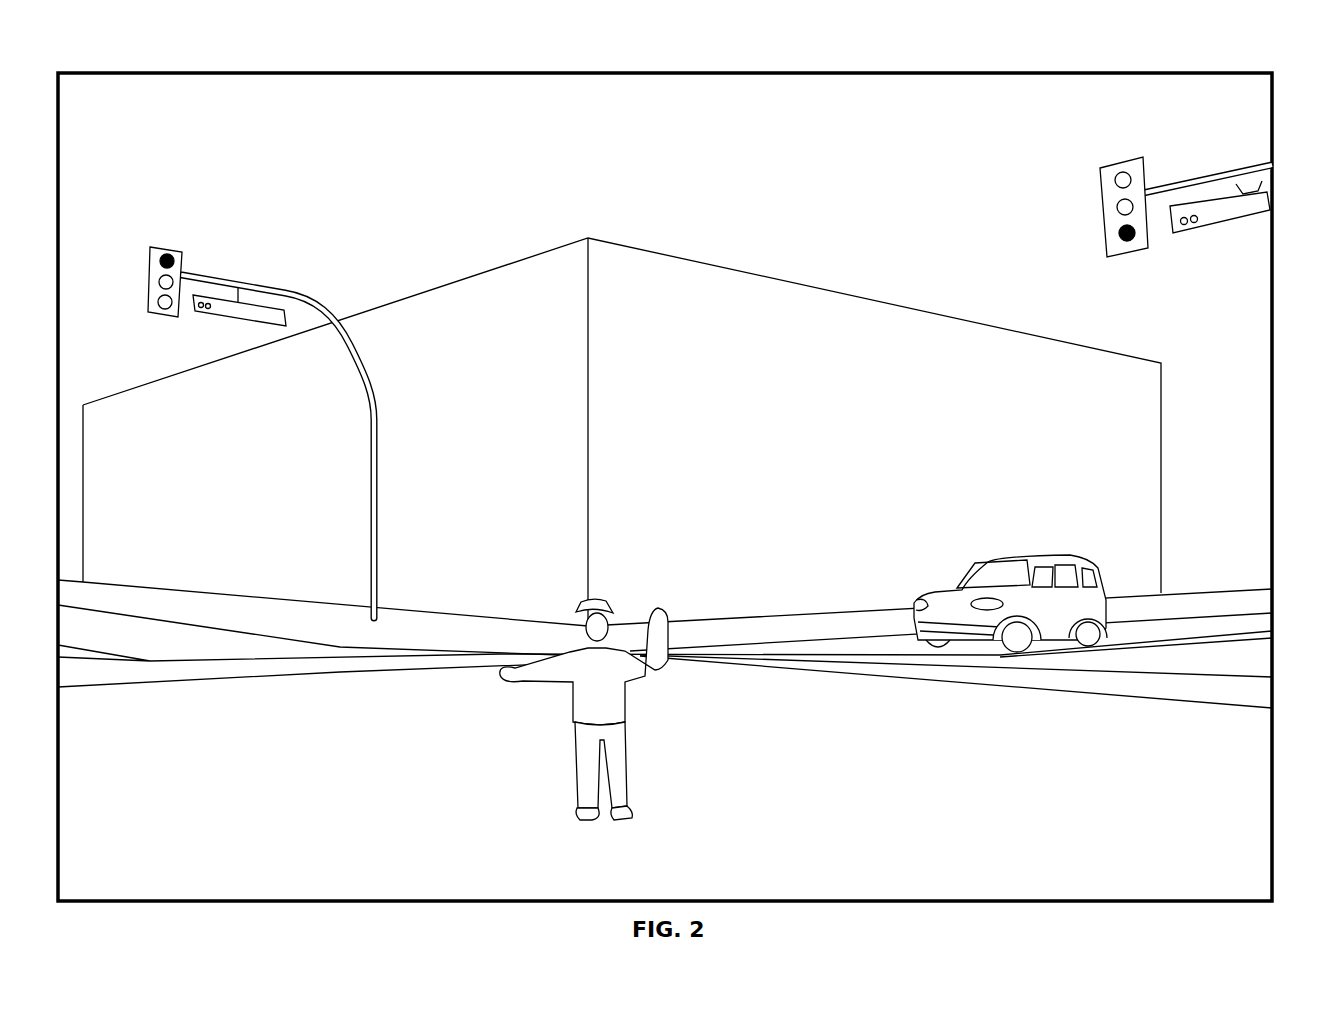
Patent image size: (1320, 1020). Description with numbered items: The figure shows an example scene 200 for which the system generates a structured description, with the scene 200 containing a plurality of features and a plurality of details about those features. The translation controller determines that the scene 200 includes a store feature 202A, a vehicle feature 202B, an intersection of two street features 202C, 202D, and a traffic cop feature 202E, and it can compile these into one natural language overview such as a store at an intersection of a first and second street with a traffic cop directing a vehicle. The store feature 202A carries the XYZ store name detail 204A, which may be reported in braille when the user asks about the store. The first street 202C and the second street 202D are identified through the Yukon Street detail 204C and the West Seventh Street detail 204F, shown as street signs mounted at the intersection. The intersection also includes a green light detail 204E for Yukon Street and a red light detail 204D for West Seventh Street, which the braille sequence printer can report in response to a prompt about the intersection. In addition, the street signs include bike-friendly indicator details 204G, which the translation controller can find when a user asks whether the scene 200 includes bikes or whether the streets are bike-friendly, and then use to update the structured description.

The scene 200 is at (1240, 56).
The store feature 202A is at (778, 280).
The vehicle feature 202B is at (912, 583).
The first street feature 202C is at (168, 670).
The second street feature 202D is at (996, 671).
The traffic cop feature 202E is at (536, 746).
The XYZ store name detail 204A is at (280, 410).
The Yukon Street detail 204C is at (232, 324).
The red light detail 204D is at (135, 259).
The green light detail 204E is at (1090, 210).
The West 7th Street detail 204F is at (1243, 230).
The bike-friendly indicator detail 204G is at (211, 280).